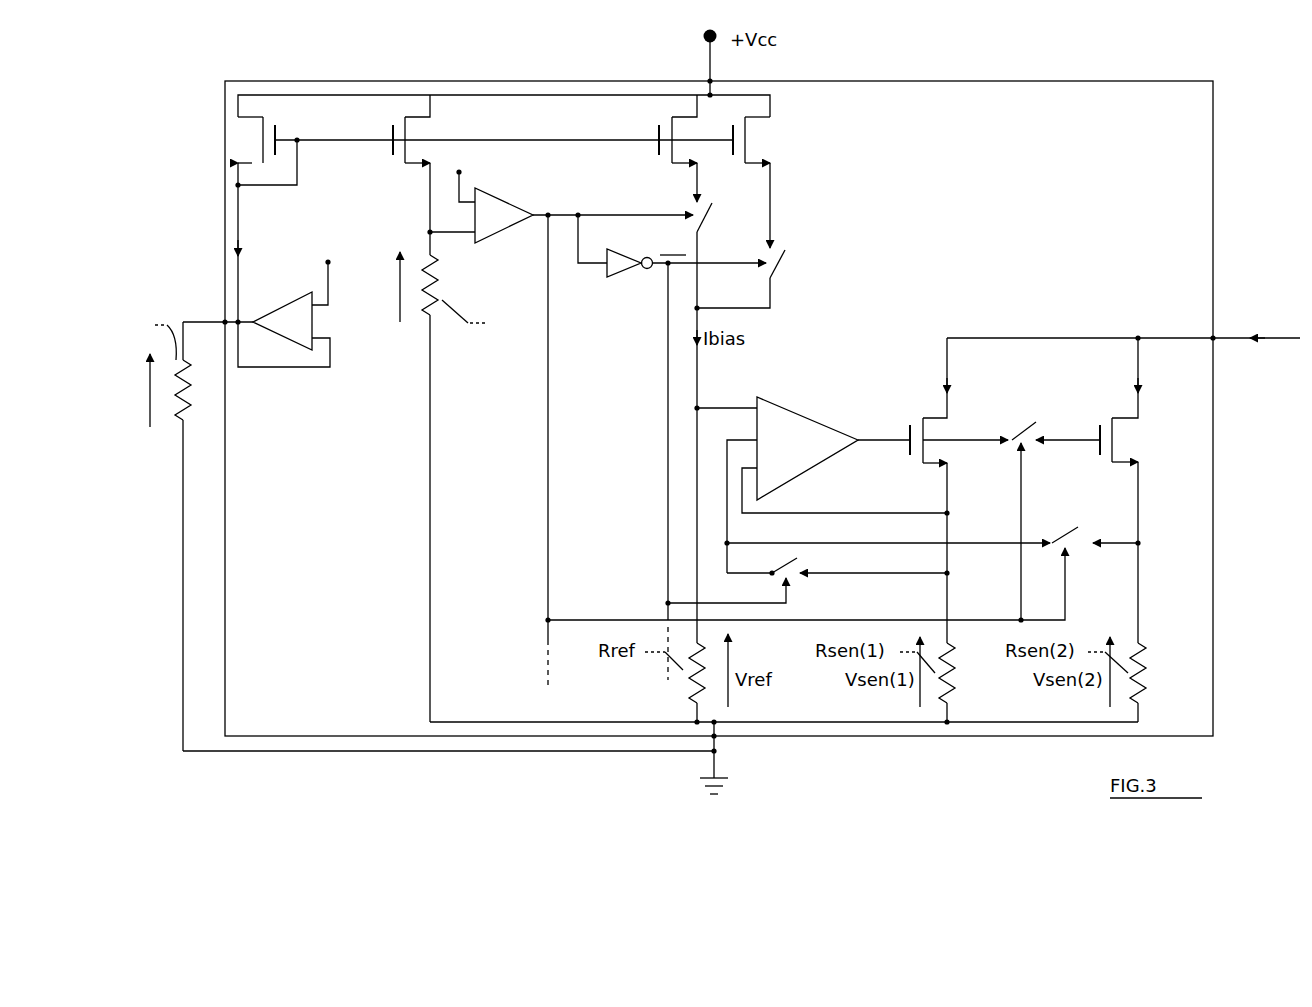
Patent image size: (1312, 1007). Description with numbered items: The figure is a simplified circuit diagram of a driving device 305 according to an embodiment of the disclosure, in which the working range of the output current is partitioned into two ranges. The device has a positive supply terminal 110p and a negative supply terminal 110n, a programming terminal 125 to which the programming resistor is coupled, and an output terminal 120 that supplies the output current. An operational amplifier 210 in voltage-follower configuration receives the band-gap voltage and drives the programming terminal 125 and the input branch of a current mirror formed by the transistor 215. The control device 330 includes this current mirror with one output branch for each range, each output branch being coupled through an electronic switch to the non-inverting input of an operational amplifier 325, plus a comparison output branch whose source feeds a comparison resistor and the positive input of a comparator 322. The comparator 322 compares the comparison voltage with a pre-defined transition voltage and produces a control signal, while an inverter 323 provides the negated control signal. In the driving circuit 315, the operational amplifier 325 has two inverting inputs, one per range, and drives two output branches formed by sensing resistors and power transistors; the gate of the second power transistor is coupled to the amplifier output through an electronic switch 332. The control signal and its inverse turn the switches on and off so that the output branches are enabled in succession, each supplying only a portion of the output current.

The positive supply terminal 110p is at (707, 79).
The negative supply terminal 110n is at (717, 741).
The output terminal 120 is at (1215, 336).
The programming terminal 125 is at (225, 320).
The operational amplifier 210 is at (285, 340).
The transistor 215 is at (277, 130).
The driving device 305 is at (224, 205).
The driving circuit 315 is at (966, 232).
The comparator 322 is at (510, 202).
The inverter 323 is at (640, 274).
The operational amplifier 325 is at (786, 400).
The control device 330 is at (364, 452).
The electronic switch 332 is at (1034, 424).